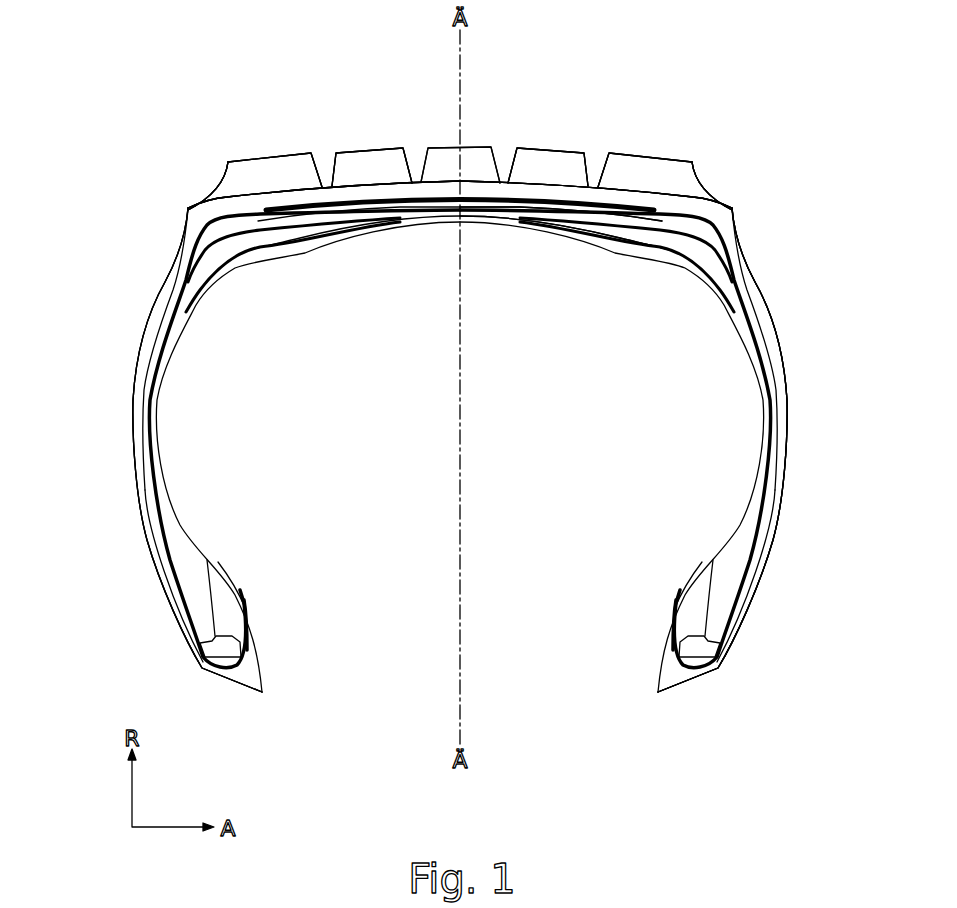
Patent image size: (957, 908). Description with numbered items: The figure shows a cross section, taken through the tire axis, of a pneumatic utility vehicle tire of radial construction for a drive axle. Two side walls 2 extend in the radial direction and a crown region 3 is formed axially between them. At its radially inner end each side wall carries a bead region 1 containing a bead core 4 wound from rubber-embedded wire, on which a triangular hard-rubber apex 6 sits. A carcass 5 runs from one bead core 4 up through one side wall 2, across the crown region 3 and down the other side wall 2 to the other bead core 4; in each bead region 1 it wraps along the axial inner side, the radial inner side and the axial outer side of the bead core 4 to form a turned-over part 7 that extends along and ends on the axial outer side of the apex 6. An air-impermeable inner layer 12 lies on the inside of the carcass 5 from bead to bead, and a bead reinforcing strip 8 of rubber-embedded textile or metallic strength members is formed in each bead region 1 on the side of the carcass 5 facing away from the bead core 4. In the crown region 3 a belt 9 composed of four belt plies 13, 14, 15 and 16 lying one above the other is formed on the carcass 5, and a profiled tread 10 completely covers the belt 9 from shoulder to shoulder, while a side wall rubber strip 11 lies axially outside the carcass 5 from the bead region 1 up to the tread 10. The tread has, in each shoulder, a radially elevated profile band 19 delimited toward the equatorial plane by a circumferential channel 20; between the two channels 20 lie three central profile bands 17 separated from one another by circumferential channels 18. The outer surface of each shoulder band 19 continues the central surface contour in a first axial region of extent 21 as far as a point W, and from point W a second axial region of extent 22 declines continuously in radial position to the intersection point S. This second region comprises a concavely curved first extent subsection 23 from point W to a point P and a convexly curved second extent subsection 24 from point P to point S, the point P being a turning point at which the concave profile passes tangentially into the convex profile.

The bead region 1 is at (184, 647).
The side wall 2 is at (134, 417).
The crown region 3 is at (442, 141).
The bead core 4 is at (235, 648).
The carcass 5 is at (783, 420).
The apex 6 is at (233, 603).
The turned-over part 7 is at (183, 595).
The bead reinforcing strip 8 is at (245, 640).
The belt 9 is at (557, 192).
The profiled tread 10 is at (386, 152).
The side wall rubber strip 11 is at (776, 354).
The inner layer 12 is at (755, 348).
The belt ply 13 is at (677, 236).
The belt ply 14 is at (698, 234).
The belt ply 15 is at (645, 226).
The belt ply 16 is at (603, 226).
The profile band 17 is at (356, 148).
The circumferential channel 18 is at (417, 165).
The profile band 19 is at (293, 156).
The circumferential channel 20 is at (326, 157).
The first axial region of extent 21 is at (258, 160).
The second axial region of extent 22 is at (210, 200).
The first extent subsection 23 is at (220, 170).
The second extent subsection 24 is at (187, 206).
The point W is at (224, 168).
The point P is at (188, 206).
The intersection point S is at (186, 211).